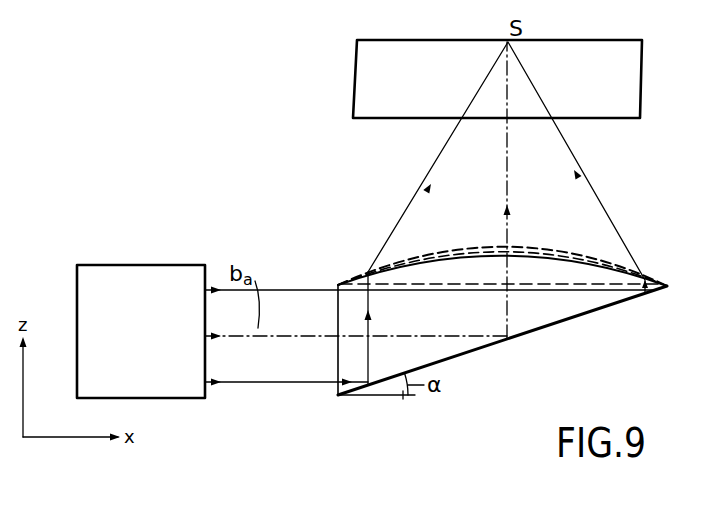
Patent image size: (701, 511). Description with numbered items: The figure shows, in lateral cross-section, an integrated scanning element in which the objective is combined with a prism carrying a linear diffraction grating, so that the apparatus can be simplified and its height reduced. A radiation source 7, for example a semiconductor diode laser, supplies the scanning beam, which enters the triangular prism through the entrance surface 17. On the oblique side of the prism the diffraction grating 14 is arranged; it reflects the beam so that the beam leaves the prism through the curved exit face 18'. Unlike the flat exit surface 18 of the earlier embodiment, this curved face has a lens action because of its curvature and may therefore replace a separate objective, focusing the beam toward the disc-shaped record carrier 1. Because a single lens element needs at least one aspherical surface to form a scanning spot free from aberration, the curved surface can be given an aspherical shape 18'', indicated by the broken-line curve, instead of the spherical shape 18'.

The record carrier 1 is at (584, 40).
The radiation source 7 is at (124, 265).
The diffraction grating 14 is at (586, 300).
The entrance surface 17 is at (337, 372).
The flat exit surface 18 is at (491, 263).
The spherical curved exit surface 18' is at (502, 243).
The aspherical curved exit surface 18'' is at (502, 229).